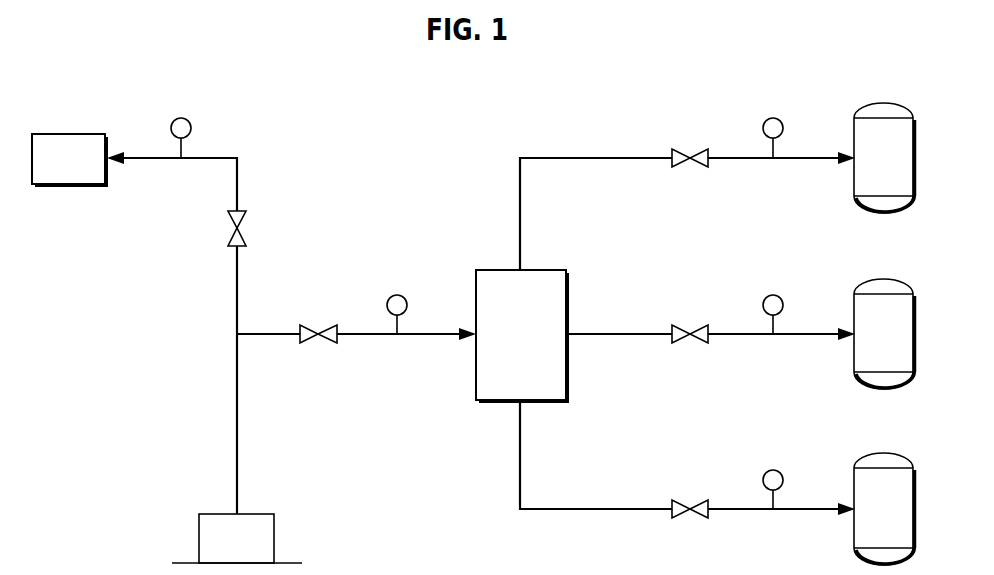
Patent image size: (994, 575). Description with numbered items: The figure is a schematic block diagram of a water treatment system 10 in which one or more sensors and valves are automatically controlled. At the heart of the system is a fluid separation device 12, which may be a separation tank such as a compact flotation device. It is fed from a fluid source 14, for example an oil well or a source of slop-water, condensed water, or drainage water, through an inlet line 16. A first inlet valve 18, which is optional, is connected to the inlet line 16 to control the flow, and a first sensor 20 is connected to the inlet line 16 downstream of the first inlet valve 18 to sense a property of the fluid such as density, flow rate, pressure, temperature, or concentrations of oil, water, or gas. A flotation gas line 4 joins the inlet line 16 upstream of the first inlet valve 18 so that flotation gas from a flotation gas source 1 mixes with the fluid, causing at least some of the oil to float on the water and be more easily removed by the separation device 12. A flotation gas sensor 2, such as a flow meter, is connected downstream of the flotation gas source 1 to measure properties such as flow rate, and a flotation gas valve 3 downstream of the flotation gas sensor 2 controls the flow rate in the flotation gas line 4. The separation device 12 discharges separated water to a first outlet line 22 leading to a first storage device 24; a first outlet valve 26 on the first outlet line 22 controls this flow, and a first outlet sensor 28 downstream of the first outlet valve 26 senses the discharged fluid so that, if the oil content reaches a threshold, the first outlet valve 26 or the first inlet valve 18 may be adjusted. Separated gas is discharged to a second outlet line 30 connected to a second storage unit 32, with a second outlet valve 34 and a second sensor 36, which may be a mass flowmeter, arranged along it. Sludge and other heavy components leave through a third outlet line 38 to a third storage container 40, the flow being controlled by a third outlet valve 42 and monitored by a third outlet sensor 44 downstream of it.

The flotation gas source 1 is at (61, 170).
The flotation gas sensor 2 is at (176, 121).
The flotation gas valve 3 is at (231, 236).
The flotation gas line 4 is at (237, 291).
The water treatment system 10 is at (318, 74).
The fluid separation device 12 is at (508, 347).
The fluid source 14 is at (224, 550).
The inlet line 16 is at (237, 425).
The first inlet valve 18 is at (311, 326).
The first sensor 20 is at (390, 297).
The first outlet line 22 is at (630, 330).
The first storage device 24 is at (871, 346).
The first outlet valve 26 is at (680, 325).
The first outlet sensor 28 is at (767, 297).
The second outlet line 30 is at (520, 202).
The second storage unit 32 is at (871, 170).
The second outlet valve 34 is at (679, 150).
The second sensor 36 is at (767, 121).
The third outlet line 38 is at (520, 461).
The third storage container 40 is at (871, 522).
The third outlet valve 42 is at (679, 502).
The third outlet sensor 44 is at (767, 472).